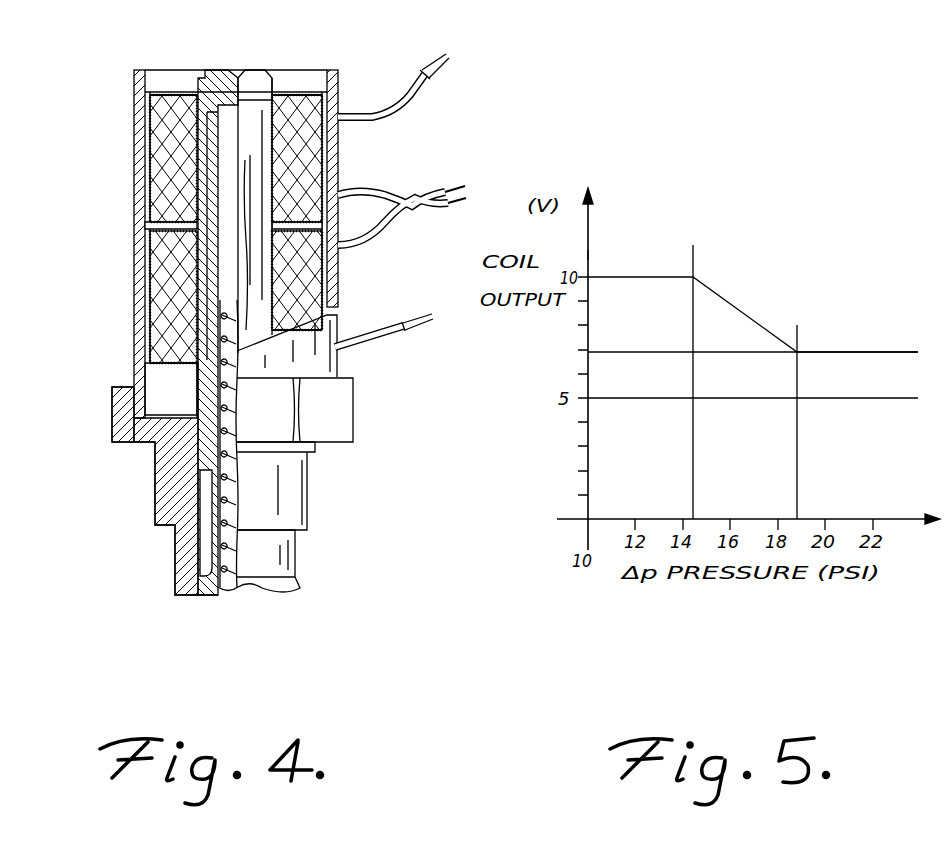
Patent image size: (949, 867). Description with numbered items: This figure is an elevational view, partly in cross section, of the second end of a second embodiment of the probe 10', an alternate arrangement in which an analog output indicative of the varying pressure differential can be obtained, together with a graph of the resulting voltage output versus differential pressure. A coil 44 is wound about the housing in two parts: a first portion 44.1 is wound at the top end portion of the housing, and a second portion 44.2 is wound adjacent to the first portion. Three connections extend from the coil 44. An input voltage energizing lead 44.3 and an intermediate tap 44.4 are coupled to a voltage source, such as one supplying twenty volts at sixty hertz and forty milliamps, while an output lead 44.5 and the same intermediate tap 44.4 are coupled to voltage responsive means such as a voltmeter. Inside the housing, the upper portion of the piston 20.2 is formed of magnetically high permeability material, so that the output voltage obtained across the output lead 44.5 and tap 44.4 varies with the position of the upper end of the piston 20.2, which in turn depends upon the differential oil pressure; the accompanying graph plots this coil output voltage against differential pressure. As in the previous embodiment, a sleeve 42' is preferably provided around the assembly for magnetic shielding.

In FIG. 4, the pressure sensor assembly 10' is at (146, 48).
In FIG. 4, the sleeve 42' is at (252, 332).
In FIG. 4, the coil 44 is at (146, 152).
In FIG. 4, the first portion 44.1 is at (155, 118).
In FIG. 4, the second portion 44.2 is at (160, 338).
In FIG. 5, the second portion 44.2 is at (588, 252).
In FIG. 4, the piston 20.2 is at (225, 232).
In FIG. 4, the input voltage energizing lead 44.3 is at (442, 68).
In FIG. 4, the intermediate tap 44.4 is at (456, 190).
In FIG. 4, the output lead 44.5 is at (430, 316).